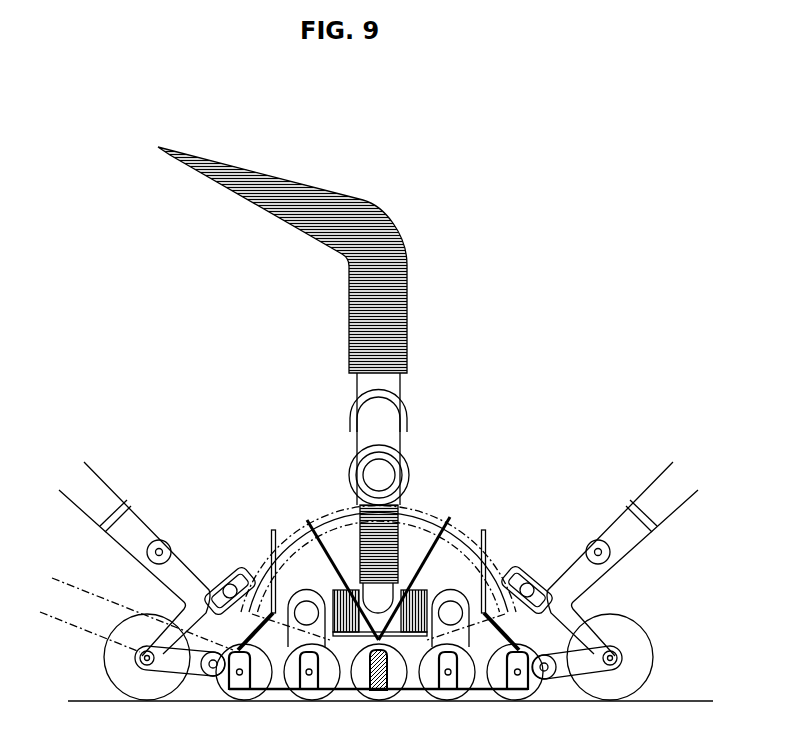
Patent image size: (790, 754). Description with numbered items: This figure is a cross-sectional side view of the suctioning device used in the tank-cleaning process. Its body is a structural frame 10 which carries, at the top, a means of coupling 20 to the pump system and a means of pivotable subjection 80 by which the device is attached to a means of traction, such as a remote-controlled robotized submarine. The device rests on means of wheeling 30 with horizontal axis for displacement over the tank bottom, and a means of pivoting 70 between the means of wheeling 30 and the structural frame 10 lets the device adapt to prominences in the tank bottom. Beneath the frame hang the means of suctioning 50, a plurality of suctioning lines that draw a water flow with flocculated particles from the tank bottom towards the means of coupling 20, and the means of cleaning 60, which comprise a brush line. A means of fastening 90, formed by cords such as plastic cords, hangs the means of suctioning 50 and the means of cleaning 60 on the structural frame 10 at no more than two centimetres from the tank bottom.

The structural frame 10 is at (320, 510).
The means of coupling 20 is at (403, 468).
The means of wheeling 30 is at (540, 650).
The means of suctioning 50 is at (230, 652).
The means of cleaning 60 is at (377, 648).
The means of pivoting 70 is at (527, 588).
The means of pivotable subjection 80 is at (597, 548).
The means of fastening 90 is at (340, 585).